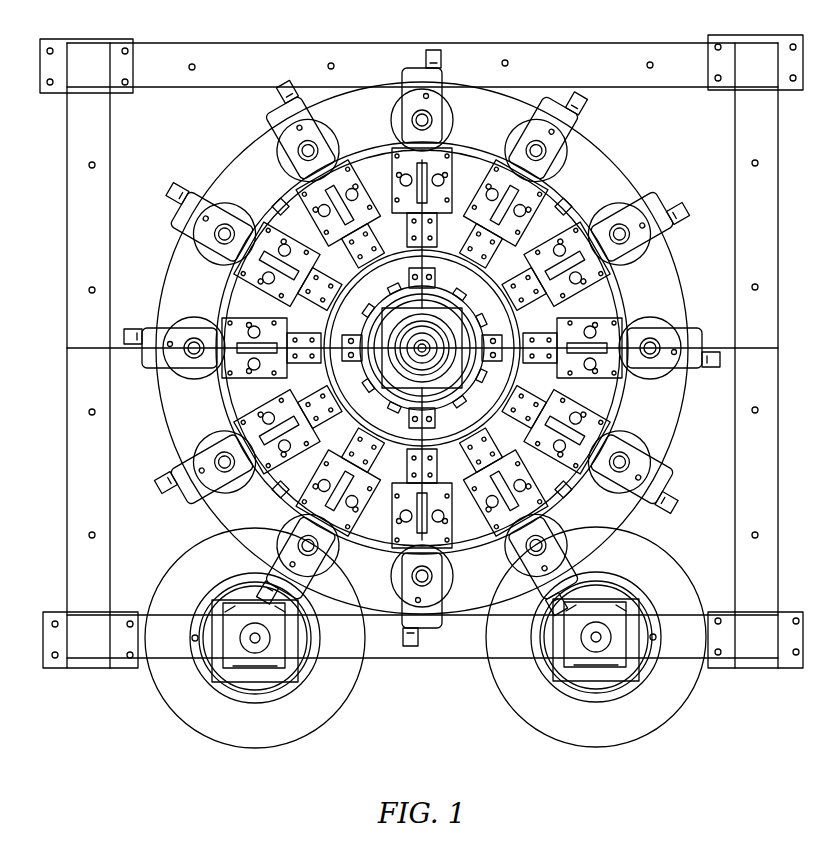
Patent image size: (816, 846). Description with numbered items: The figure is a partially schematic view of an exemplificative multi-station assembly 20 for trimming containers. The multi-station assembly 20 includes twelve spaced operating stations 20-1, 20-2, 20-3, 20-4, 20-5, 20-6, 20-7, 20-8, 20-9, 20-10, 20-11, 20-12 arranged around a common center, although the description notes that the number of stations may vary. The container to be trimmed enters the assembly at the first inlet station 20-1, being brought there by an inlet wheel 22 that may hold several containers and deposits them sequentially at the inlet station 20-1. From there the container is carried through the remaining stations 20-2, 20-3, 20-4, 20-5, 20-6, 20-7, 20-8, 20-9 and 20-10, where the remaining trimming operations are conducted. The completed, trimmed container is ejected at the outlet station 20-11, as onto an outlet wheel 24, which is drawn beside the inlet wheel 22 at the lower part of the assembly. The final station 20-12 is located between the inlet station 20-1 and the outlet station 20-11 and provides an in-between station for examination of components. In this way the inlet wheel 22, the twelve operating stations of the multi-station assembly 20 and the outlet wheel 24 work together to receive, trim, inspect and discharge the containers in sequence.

The multi-station assembly 20 is at (62, 313).
The first inlet station 20-1 is at (305, 530).
The operating station 20-2 is at (258, 428).
The operating station 20-3 is at (215, 320).
The operating station 20-4 is at (270, 222).
The operating station 20-5 is at (348, 138).
The operating station 20-6 is at (450, 140).
The operating station 20-7 is at (505, 155).
The operating station 20-8 is at (588, 210).
The operating station 20-9 is at (655, 302).
The operating station 20-10 is at (645, 445).
The outlet station 20-11 is at (638, 535).
The final station 20-12 is at (452, 605).
The inlet wheel 22 is at (185, 688).
The outlet wheel 24 is at (633, 725).